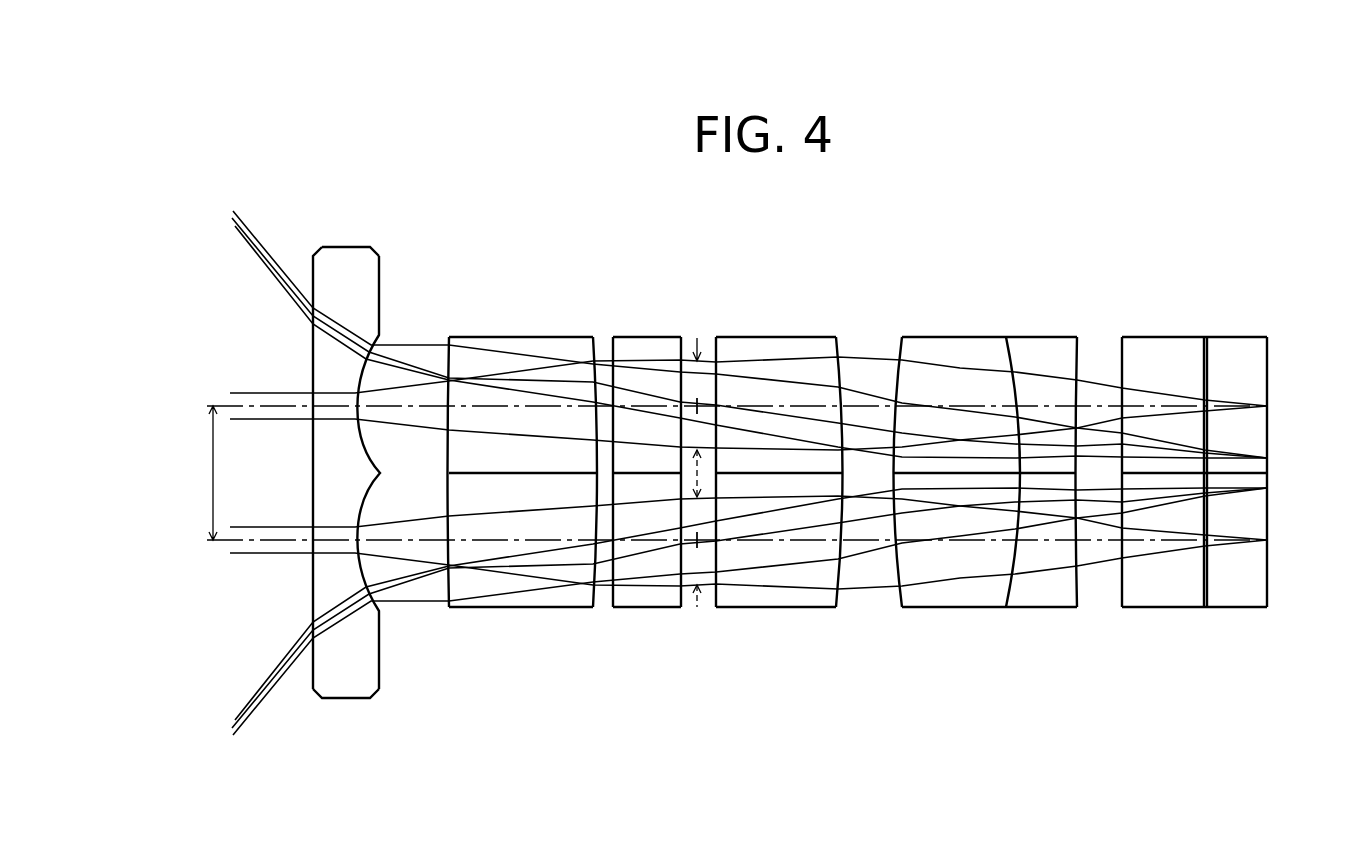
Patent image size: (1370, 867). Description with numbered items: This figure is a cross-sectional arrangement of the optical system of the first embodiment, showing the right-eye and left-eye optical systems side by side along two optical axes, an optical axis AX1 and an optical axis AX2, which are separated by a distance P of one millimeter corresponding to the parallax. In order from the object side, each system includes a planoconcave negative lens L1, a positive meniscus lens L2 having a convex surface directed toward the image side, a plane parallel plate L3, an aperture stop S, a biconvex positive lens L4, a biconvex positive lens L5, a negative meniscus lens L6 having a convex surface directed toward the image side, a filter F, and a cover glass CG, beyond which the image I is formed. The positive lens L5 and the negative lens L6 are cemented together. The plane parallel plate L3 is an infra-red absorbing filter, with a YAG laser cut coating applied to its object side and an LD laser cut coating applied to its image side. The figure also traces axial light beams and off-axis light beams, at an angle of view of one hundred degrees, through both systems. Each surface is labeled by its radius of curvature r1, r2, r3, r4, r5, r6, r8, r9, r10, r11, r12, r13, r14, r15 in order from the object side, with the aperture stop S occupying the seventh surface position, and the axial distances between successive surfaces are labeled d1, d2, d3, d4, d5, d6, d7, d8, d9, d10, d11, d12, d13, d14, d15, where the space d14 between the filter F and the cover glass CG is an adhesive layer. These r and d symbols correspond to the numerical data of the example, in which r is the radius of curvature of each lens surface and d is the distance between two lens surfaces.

The planoconcave negative lens L1 is at (338, 510).
The positive meniscus lens L2 is at (518, 513).
The plane parallel plate L3 is at (638, 513).
The biconvex positive lens L4 is at (781, 513).
The biconvex positive lens L5 is at (956, 513).
The negative meniscus lens L6 is at (1050, 513).
The filter F is at (1160, 513).
The cover glass CG is at (1217, 513).
The image plane I is at (1267, 352).
The aperture stop S is at (697, 338).
The optical axis AX1 is at (220, 404).
The optical axis AX2 is at (220, 545).
The distance between optical axes P is at (202, 473).
The radius of curvature of lens surface r1 is at (313, 358).
The radius of curvature of lens surface r2 is at (379, 312).
The radius of curvature of lens surface r3 is at (449, 343).
The radius of curvature of lens surface r4 is at (594, 345).
The radius of curvature of lens surface r5 is at (613, 345).
The radius of curvature of lens surface r6 is at (681, 345).
The radius of curvature of lens surface r8 is at (716, 345).
The radius of curvature of lens surface r9 is at (837, 345).
The radius of curvature of lens surface r10 is at (902, 345).
The radius of curvature of lens surface r11 is at (1010, 350).
The radius of curvature of lens surface r12 is at (1077, 345).
The radius of curvature of lens surface r13 is at (1122, 345).
The radius of curvature of lens surface r14 is at (1204, 355).
The radius of curvature of lens surface r15 is at (1209, 368).
The distance between lens surfaces d1 is at (332, 542).
The distance between lens surfaces d2 is at (398, 542).
The distance between lens surfaces d3 is at (508, 542).
The distance between lens surfaces d4 is at (603, 542).
The distance between lens surfaces d5 is at (647, 542).
The distance between lens surfaces d6 is at (688, 542).
The distance between lens surfaces d7 is at (703, 542).
The distance between lens surfaces d8 is at (782, 542).
The distance between lens surfaces d9 is at (868, 542).
The distance between lens surfaces d10 is at (957, 542).
The distance between lens surfaces d11 is at (1045, 542).
The distance between lens surfaces d12 is at (1098, 542).
The distance between lens surfaces d13 is at (1163, 542).
The space between filter and cover glass d14 is at (1207, 542).
The distance between lens surfaces d15 is at (1235, 542).